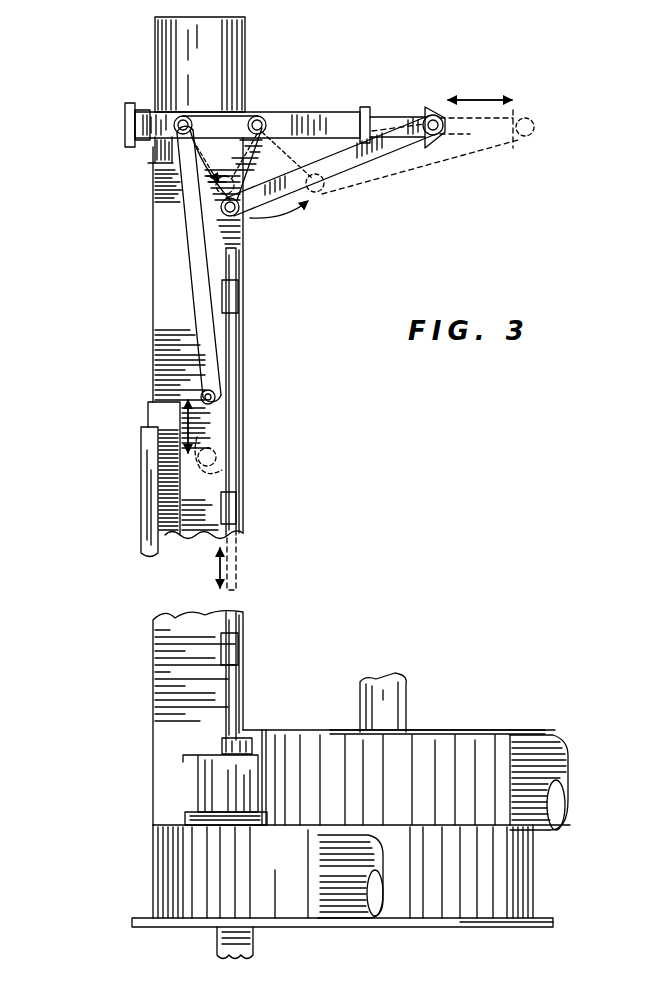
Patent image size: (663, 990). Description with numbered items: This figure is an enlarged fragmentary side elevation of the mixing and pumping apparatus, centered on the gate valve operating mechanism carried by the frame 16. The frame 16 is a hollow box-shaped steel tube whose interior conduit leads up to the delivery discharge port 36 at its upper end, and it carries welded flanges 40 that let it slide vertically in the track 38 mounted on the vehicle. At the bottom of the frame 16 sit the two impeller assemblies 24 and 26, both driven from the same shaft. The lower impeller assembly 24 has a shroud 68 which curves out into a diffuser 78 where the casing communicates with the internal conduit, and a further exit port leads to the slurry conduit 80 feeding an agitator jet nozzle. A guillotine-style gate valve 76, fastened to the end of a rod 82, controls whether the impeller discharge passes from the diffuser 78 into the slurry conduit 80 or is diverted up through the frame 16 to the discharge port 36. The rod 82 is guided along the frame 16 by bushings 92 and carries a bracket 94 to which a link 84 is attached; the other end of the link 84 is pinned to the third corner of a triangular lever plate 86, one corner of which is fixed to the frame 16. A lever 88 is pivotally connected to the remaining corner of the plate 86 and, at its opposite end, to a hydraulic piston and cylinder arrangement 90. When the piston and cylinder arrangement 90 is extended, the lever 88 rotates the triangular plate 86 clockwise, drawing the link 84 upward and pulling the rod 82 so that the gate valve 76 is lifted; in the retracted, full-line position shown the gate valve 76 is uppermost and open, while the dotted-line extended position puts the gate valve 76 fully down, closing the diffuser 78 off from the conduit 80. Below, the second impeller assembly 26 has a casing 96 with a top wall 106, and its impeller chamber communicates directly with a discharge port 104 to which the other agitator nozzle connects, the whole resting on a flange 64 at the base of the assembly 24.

The frame 16 is at (150, 300).
The impeller assembly 24 is at (482, 930).
The impeller assembly 26 is at (512, 688).
The delivery discharge port 36 is at (230, 45).
The track 38 is at (148, 496).
The flanges 40 is at (163, 417).
The flange 64 is at (522, 928).
The shroud 68 is at (515, 882).
The gate valve 76 is at (207, 777).
The diffuser 78 is at (288, 893).
The slurry conduit 80 is at (357, 880).
The rod 82 is at (232, 430).
The link 84 is at (190, 221).
The triangular lever plate 86 is at (232, 125).
The lever 88 is at (353, 162).
The piston and cylinder arrangement 90 is at (335, 111).
The bushing 92 is at (236, 295).
The bracket 94 is at (218, 400).
The casing 96 is at (463, 728).
The discharge port 104 is at (540, 753).
The top wall 106 is at (432, 728).